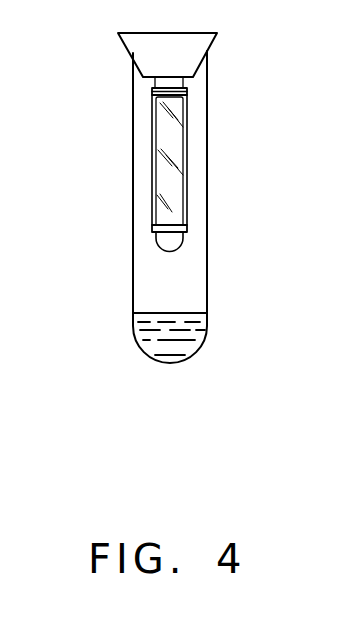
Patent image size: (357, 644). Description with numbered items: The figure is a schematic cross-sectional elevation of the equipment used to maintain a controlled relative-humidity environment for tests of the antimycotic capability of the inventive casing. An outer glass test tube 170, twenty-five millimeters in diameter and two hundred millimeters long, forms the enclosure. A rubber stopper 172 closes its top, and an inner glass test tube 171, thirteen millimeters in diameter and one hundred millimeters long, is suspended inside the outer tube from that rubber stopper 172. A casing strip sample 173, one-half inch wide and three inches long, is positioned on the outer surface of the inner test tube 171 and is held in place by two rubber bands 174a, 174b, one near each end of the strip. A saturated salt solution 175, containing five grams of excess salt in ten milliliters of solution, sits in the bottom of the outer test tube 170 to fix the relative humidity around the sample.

The outer glass test tube 170 is at (133, 289).
The inner glass test tube 171 is at (155, 158).
The rubber stopper 172 is at (121, 47).
The casing strip sample 173 is at (187, 163).
The rubber band 174a is at (187, 95).
The rubber band 174b is at (187, 230).
The saturated salt solution 175 is at (206, 333).